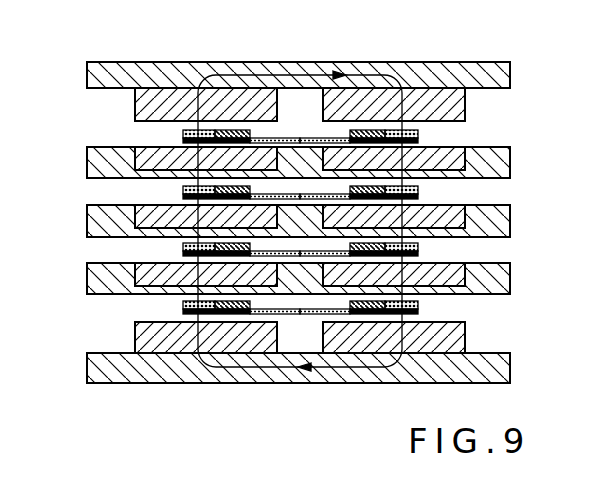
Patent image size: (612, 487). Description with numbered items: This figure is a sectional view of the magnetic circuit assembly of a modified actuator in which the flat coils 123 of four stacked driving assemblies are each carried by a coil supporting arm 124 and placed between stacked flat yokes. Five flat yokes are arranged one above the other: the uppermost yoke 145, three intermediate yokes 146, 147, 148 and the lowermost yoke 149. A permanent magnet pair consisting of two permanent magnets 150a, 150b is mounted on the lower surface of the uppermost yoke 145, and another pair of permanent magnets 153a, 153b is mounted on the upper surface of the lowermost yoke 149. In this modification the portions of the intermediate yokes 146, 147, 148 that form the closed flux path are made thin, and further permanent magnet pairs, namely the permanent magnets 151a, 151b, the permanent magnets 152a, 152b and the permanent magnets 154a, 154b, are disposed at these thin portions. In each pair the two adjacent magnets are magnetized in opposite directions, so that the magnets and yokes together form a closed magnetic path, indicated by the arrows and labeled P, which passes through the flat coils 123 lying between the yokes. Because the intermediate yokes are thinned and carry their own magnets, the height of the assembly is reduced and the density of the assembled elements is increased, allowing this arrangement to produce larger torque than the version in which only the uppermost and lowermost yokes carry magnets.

The uppermost yoke 145 is at (422, 72).
The intermediate yoke 146 is at (97, 160).
The intermediate yoke 147 is at (100, 218).
The intermediate yoke 148 is at (100, 279).
The lowermost yoke 149 is at (138, 372).
The permanent magnet 150a is at (148, 105).
The permanent magnet 150b is at (460, 107).
The permanent magnet 151a is at (150, 158).
The permanent magnet 151b is at (455, 158).
The permanent magnet 152a is at (148, 213).
The permanent magnet 152b is at (455, 215).
The permanent magnet 153a is at (147, 334).
The permanent magnet 153b is at (458, 339).
The permanent magnet 154a is at (145, 272).
The permanent magnet 154b is at (455, 278).
The flat coil 123 is at (183, 135).
The coil supporting arm 124 is at (418, 136).
The magnetic flux path P is at (343, 370).